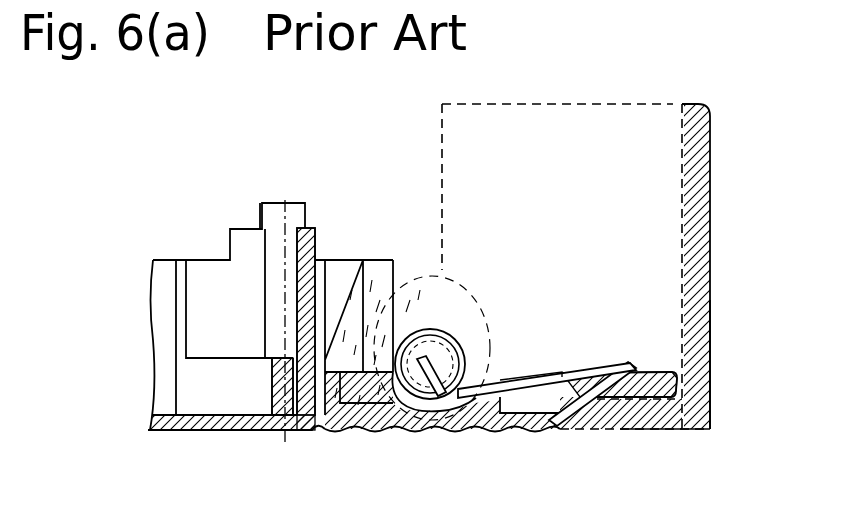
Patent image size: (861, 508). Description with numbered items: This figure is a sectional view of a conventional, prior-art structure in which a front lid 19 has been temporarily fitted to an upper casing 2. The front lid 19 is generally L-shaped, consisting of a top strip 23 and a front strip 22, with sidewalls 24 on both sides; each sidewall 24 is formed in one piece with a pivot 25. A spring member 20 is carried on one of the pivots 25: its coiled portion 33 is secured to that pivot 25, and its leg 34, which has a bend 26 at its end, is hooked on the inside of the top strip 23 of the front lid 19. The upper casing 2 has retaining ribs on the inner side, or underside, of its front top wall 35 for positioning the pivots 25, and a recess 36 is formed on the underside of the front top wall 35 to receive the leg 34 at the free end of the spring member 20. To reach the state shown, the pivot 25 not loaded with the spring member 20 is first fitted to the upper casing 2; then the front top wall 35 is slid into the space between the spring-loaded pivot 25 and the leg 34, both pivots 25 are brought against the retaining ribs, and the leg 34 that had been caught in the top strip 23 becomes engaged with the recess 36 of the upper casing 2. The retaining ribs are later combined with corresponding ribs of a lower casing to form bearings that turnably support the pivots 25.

The upper casing 2 is at (221, 436).
The front lid 19 is at (718, 210).
The spring member 20 is at (475, 410).
The front strip 22 is at (714, 350).
The top strip 23 is at (660, 428).
The sidewall 24 is at (455, 280).
The pivot 25 is at (441, 330).
The bend 26 is at (630, 361).
The coiled portion 33 is at (460, 338).
The leg 34 is at (473, 387).
The front top wall 35 is at (542, 428).
The recess 36 is at (577, 371).